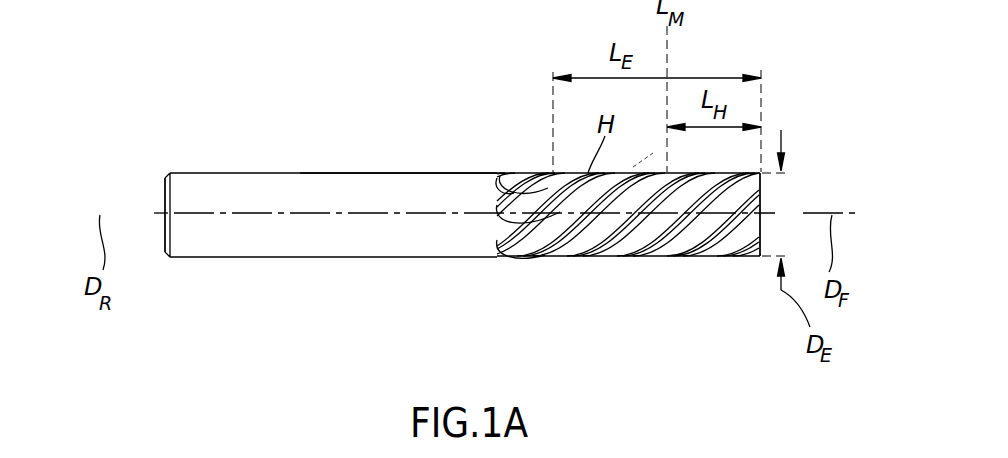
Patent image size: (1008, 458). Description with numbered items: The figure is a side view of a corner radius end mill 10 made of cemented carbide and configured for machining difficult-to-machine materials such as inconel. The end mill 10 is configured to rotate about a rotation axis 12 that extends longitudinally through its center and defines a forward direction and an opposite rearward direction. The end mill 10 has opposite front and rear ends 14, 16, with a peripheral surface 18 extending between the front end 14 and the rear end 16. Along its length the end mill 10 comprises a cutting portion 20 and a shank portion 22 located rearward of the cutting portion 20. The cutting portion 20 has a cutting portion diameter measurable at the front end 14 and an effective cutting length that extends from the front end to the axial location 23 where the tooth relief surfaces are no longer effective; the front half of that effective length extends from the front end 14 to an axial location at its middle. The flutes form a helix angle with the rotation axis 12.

The corner radius end mill 10 is at (705, 52).
The rotation axis 12 is at (70, 213).
The front end 14 is at (773, 195).
The rear end 16 is at (155, 188).
The peripheral surface 18 is at (430, 172).
The cutting portion 20 is at (760, 259).
The shank portion 22 is at (165, 260).
The axial location where tooth relief surfaces are no longer effective 23 is at (545, 175).